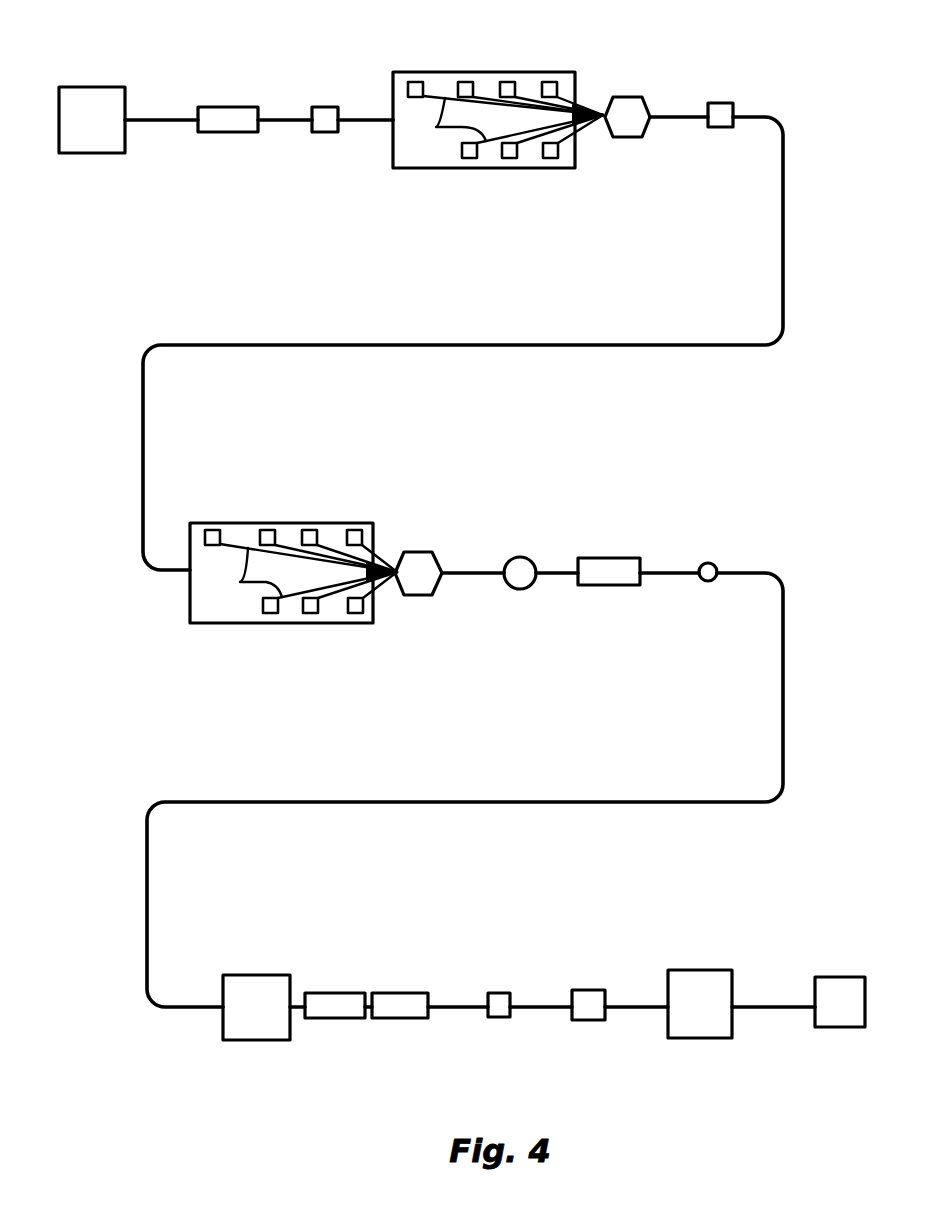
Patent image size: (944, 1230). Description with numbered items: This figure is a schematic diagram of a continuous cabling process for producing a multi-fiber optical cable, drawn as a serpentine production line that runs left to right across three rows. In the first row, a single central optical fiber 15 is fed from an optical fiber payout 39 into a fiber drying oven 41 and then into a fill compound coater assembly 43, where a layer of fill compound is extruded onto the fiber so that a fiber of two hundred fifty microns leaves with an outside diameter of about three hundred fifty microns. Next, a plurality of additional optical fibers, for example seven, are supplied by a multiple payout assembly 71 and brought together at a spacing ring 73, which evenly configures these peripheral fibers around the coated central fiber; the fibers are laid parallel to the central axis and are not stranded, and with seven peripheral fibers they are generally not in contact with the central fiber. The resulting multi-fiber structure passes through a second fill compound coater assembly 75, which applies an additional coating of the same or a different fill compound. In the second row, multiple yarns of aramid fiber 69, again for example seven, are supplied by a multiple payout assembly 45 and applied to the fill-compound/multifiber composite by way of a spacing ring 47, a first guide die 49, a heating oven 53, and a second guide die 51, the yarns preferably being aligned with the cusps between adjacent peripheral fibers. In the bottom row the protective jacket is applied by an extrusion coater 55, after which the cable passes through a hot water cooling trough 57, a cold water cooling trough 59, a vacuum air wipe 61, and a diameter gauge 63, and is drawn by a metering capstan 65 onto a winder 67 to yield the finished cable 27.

The optical fiber payout 39 is at (90, 100).
The optical fiber 15 is at (157, 124).
The fiber drying oven 41 is at (224, 107).
The fill compound coater assembly 43 is at (322, 107).
The multiple payout assembly 71 is at (440, 78).
The spacing ring 73 is at (623, 99).
The fill compound coater assembly 75 is at (720, 103).
The multiple payout assembly 45 is at (198, 533).
The aramid fiber 69 is at (239, 577).
The spacing ring 47 is at (418, 552).
The first guide die 49 is at (518, 557).
The heating oven 53 is at (598, 558).
The second guide die 51 is at (705, 563).
The extrusion coater 55 is at (248, 982).
The finished cable 27 is at (300, 1003).
The hot water cooling trough 57 is at (328, 1000).
The cold water cooling trough 59 is at (394, 997).
The vacuum air wipe 61 is at (497, 996).
The diameter gauge 63 is at (588, 996).
The metering capstan 65 is at (695, 981).
The winder 67 is at (835, 986).